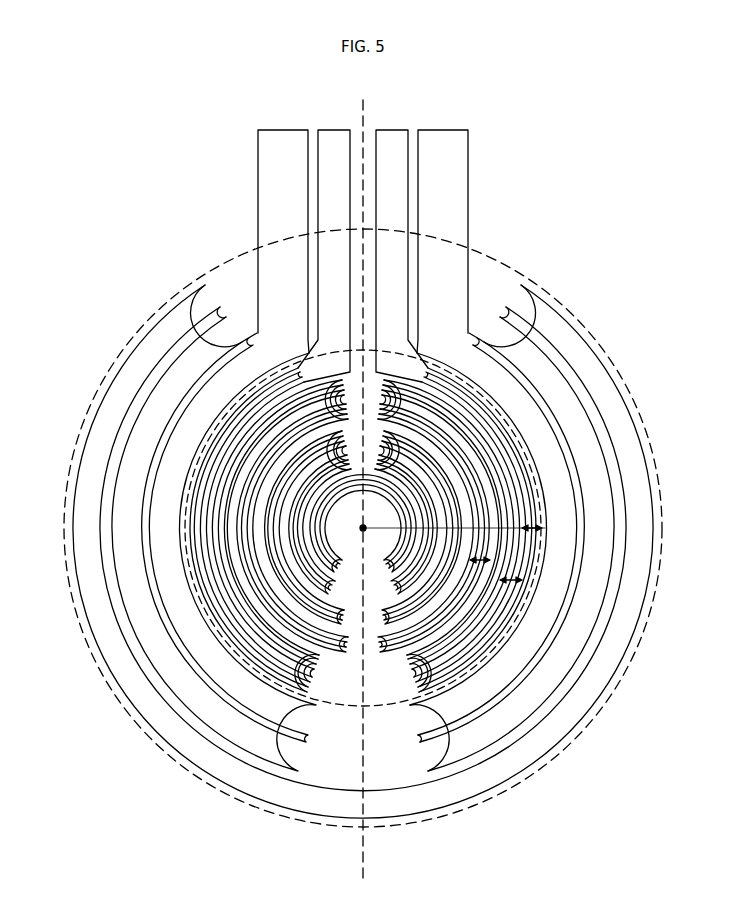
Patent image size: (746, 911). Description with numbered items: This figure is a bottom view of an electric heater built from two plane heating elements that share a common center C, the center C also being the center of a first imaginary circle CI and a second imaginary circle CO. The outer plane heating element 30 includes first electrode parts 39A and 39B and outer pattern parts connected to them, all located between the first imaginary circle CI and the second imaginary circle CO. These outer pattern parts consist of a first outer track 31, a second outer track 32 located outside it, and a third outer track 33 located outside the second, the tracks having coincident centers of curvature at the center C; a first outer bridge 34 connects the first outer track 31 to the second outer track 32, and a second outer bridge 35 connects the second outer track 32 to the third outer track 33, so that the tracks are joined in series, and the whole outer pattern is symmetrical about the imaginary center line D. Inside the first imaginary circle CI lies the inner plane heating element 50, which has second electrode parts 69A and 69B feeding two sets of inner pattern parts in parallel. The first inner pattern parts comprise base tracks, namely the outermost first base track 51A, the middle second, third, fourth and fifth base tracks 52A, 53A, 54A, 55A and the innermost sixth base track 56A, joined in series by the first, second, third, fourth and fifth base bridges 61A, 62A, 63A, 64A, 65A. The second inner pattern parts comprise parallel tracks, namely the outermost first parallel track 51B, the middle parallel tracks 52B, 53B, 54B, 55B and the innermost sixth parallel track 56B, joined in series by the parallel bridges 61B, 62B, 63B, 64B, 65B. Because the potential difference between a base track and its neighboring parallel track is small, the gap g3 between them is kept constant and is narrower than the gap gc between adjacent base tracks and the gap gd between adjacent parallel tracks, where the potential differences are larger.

The outer plane heating element 30 is at (622, 720).
The first outer track 31 is at (535, 428).
The second outer track 32 is at (545, 376).
The third outer track 33 is at (540, 317).
The first outer bridge 34 is at (390, 748).
The second outer bridge 35 is at (529, 290).
The first electrode part 39A is at (443, 128).
The first electrode part 39B is at (283, 128).
The inner plane heating element 50 is at (480, 712).
The first base track 51A is at (337, 559).
The first parallel track 51B is at (337, 574).
The second base track 52A is at (337, 584).
The second parallel track 52B is at (329, 592).
The third base track 53A is at (282, 557).
The third parallel track 53B is at (284, 583).
The fourth base track 54A is at (252, 544).
The fourth parallel track 54B is at (241, 517).
The fifth base track 55A is at (245, 460).
The fifth parallel track 55B is at (222, 490).
The sixth base track 56A is at (240, 425).
The sixth parallel track 56B is at (258, 394).
The first base bridge 61A is at (372, 742).
The first parallel bridge 61B is at (410, 713).
The second base bridge 62A is at (300, 372).
The second parallel bridge 62B is at (222, 312).
The third base bridge 63A is at (430, 690).
The third parallel bridge 63B is at (470, 690).
The fourth base bridge 64A is at (385, 400).
The fourth parallel bridge 64B is at (348, 445).
The fifth base bridge 65A is at (464, 688).
The fifth parallel bridge 65B is at (545, 612).
The second electrode part 69A is at (392, 128).
The second electrode part 69B is at (334, 128).
The center C is at (545, 565).
The first imaginary circle CI is at (525, 462).
The second imaginary circle CO is at (512, 269).
The imaginary center line D is at (366, 488).
The gap g3 is at (545, 526).
The gap gc is at (525, 580).
The gap gd is at (470, 560).